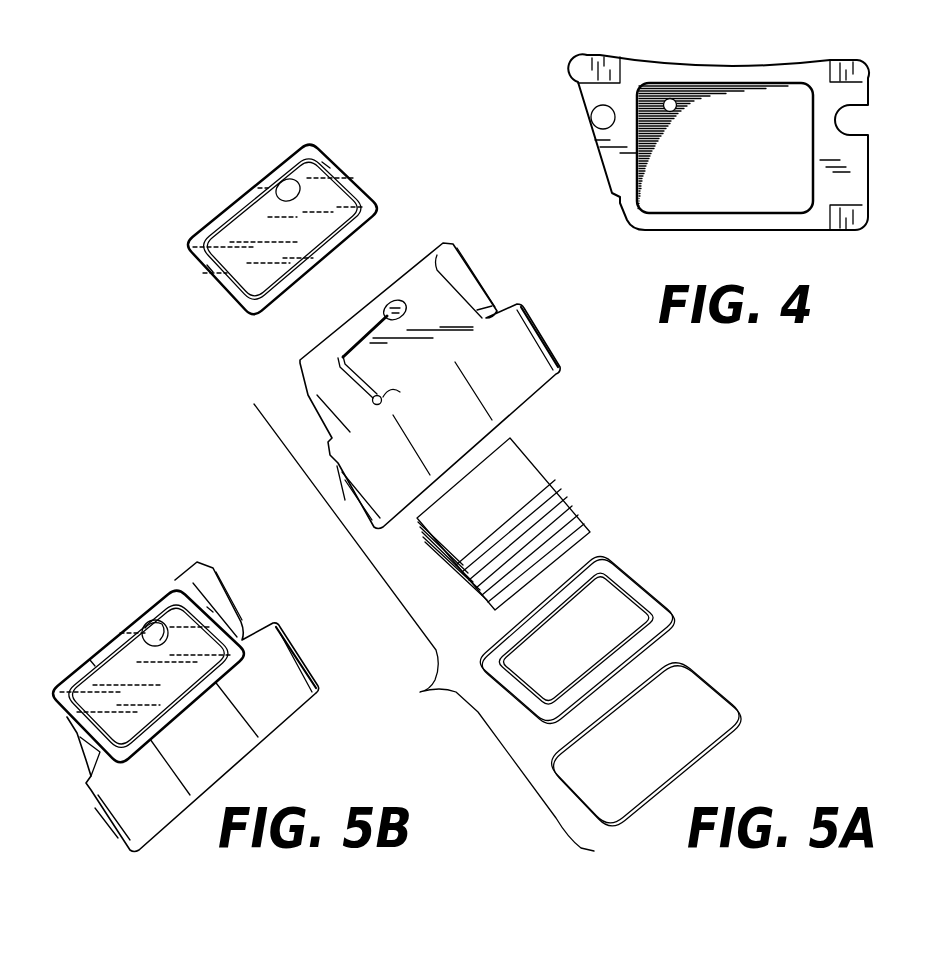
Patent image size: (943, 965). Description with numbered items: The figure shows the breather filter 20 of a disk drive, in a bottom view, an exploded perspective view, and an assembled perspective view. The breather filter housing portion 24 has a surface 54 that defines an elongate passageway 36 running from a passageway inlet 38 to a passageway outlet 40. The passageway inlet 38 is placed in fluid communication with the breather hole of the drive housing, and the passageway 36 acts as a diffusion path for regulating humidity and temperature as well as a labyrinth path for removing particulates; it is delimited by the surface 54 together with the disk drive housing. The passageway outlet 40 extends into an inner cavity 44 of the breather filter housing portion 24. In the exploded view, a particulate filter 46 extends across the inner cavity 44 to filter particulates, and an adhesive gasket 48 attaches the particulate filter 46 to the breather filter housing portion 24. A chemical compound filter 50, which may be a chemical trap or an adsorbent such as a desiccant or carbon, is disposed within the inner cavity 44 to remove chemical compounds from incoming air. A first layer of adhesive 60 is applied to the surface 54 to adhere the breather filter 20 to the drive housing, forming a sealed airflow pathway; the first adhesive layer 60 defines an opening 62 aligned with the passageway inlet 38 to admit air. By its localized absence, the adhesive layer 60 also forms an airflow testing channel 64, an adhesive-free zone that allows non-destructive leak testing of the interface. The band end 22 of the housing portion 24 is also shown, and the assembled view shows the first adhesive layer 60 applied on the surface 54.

In FIG. 4, the breather filter 20 is at (550, 122).
In FIG. 5A, the breather filter 20 is at (424, 627).
In FIG. 4, the first band leg 22 is at (647, 67).
In FIG. 5A, the first band leg 22 is at (538, 336).
In FIG. 5B, the first band leg 22 is at (293, 653).
In FIG. 4, the breather filter housing portion 24 is at (612, 165).
In FIG. 5A, the breather filter housing portion 24 is at (310, 378).
In FIG. 5A, the elongate passageway 36 is at (340, 348).
In FIG. 5A, the passageway inlet 38 is at (390, 305).
In FIG. 5B, the passageway inlet 38 is at (142, 604).
In FIG. 4, the passageway outlet 40 is at (677, 107).
In FIG. 5A, the passageway outlet 40 is at (400, 392).
In FIG. 4, the inner cavity 44 is at (712, 187).
In FIG. 5A, the particulate filter 46 is at (700, 697).
In FIG. 5A, the adhesive gasket 48 is at (645, 593).
In FIG. 5A, the chemical compound filter 50 is at (537, 475).
In FIG. 5A, the surface 54 is at (442, 303).
In FIG. 5A, the first layer of adhesive 60 is at (305, 152).
In FIG. 5B, the first layer of adhesive 60 is at (168, 597).
In FIG. 5A, the opening 62 is at (283, 187).
In FIG. 5B, the opening 62 is at (153, 633).
In FIG. 5A, the airflow testing channel 64 is at (322, 162).
In FIG. 5B, the airflow testing channel 64 is at (207, 607).